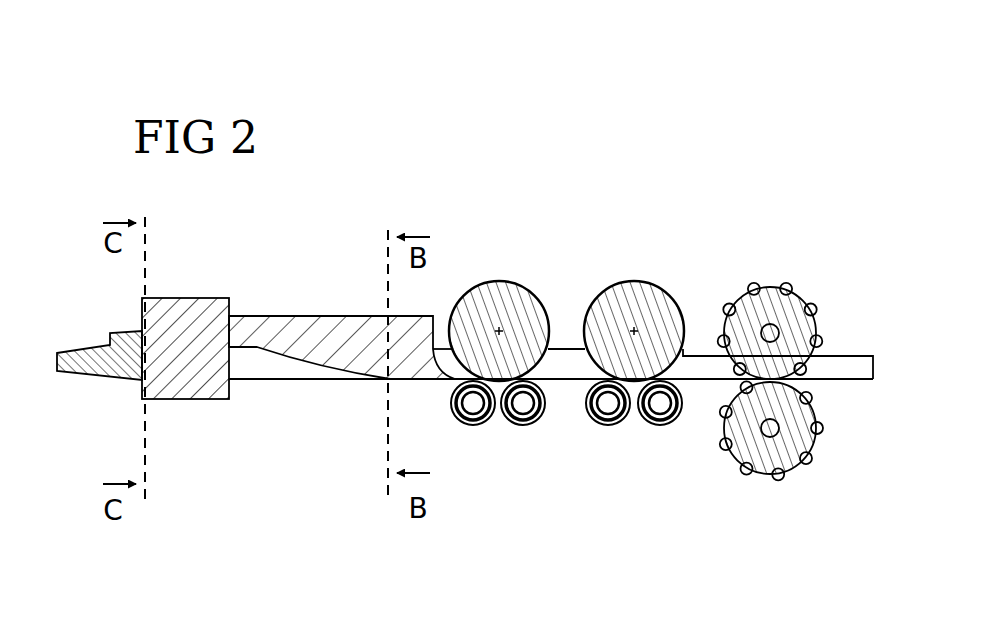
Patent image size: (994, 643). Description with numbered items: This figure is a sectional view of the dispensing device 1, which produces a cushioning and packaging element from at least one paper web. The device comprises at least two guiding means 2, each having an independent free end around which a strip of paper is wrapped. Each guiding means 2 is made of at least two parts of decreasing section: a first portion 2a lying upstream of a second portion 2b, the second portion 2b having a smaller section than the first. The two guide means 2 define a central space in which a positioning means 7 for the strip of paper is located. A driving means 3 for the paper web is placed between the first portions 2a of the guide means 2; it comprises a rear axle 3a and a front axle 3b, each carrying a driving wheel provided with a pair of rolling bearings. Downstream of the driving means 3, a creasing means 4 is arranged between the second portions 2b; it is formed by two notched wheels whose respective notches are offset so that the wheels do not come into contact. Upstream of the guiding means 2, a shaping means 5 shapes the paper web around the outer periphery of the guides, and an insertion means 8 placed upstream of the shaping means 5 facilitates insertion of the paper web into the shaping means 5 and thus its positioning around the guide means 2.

The dispensing device 1 is at (652, 101).
The guiding means 2 is at (525, 516).
The first portion 2a is at (568, 388).
The second portion 2b is at (697, 390).
The driving means 3 is at (488, 152).
The rear axle 3a is at (486, 270).
The front axle 3b is at (605, 270).
The creasing means 4 is at (778, 275).
The shaping means 5 is at (202, 296).
The positioning means 7 is at (331, 316).
The insertion means 8 is at (90, 340).